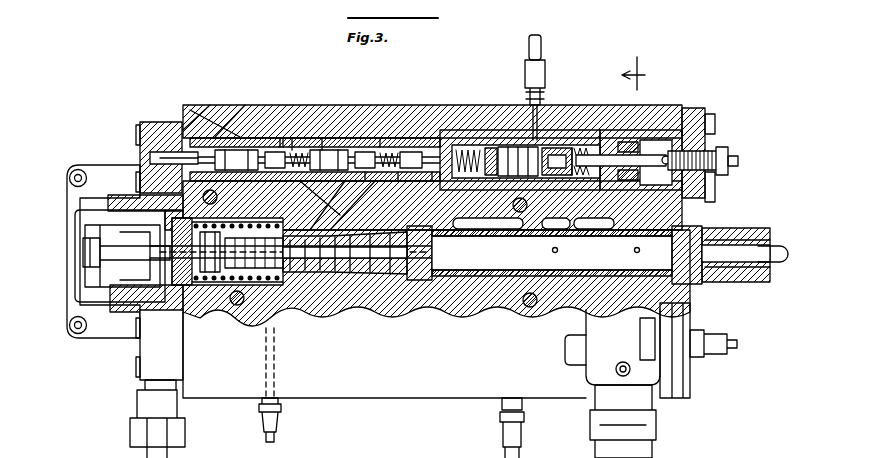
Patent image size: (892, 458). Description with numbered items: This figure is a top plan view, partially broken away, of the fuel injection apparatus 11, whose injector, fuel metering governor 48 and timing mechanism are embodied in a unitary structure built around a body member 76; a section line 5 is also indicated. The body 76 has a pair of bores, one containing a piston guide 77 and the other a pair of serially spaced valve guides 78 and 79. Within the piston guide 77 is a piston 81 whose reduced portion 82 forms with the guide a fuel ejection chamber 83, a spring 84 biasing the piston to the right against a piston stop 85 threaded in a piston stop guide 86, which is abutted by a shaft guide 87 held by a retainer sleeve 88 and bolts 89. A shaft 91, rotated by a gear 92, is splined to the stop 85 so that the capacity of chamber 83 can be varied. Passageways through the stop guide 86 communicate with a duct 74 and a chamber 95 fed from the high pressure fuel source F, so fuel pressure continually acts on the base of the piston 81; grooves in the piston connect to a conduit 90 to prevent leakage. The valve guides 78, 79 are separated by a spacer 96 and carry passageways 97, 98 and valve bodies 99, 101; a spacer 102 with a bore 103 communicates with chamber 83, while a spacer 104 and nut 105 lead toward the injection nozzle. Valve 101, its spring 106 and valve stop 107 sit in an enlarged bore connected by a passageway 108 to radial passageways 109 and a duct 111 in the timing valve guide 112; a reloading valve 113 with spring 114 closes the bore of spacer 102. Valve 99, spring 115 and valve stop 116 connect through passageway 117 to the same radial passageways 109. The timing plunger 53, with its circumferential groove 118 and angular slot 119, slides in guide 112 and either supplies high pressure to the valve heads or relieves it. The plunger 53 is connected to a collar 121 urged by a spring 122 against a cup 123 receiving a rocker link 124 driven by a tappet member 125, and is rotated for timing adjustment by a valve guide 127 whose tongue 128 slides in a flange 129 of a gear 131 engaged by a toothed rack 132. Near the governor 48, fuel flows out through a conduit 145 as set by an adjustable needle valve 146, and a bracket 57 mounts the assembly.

The section line 5 is at (638, 73).
The apparatus 11 is at (714, 93).
The fuel metering governor 48 is at (223, 451).
The timing plunger 53 is at (302, 278).
The bracket 57 is at (512, 321).
The passageway or duct 74 is at (574, 236).
The body member 76 is at (459, 398).
The piston guide 77 is at (466, 156).
The valve guide 78 is at (248, 158).
The valve guide 79 is at (336, 131).
The piston 81 is at (530, 148).
The reduced portion 82 is at (488, 156).
The fuel ejection chamber 83 is at (450, 158).
The spring 84 is at (470, 130).
The piston stop 85 is at (547, 158).
The piston stop guide 86 is at (580, 136).
The shaft guide 87 is at (598, 156).
The retainer sleeve 88 is at (682, 150).
The bolts 89 is at (716, 123).
The conduit 90 is at (537, 42).
The shaft 91 is at (614, 160).
The gear 92 is at (640, 158).
The central bore or chamber 95 is at (651, 255).
The spacer 96 is at (310, 158).
The passageway 97 is at (266, 162).
The passageway 98 is at (350, 158).
The valve body 99 is at (238, 158).
The valve body 101 is at (322, 163).
The spacer 102 is at (396, 150).
The bore 103 is at (420, 140).
The spacer 104 is at (200, 136).
The nut 105 is at (162, 128).
The spring 106 is at (365, 170).
The valve stop 107 is at (381, 138).
The passageway 108 is at (372, 210).
The radial passageways 109 is at (338, 282).
The passageway or duct 111 is at (392, 283).
The timing valve guide 112 is at (368, 276).
The reloading valve 113 is at (399, 170).
The spring 114 is at (433, 170).
The spring 115 is at (281, 136).
The valve stop 116 is at (292, 148).
The passageway 117 is at (312, 190).
The circumferential groove 118 is at (328, 270).
The slot 119 is at (316, 274).
The collar 121 is at (157, 384).
The spring 122 is at (196, 300).
The cup 123 is at (133, 297).
The rocker link 124 is at (261, 254).
The tappet member 125 is at (93, 271).
The valve guide 127 is at (215, 290).
The tongue 128 is at (216, 199).
The flange 129 is at (266, 230).
The gear 131 is at (277, 284).
The toothed rack 132 is at (286, 279).
The conduit 145 is at (417, 428).
The needle valve 146 is at (276, 393).
The high pressure source of fuel F is at (798, 244).